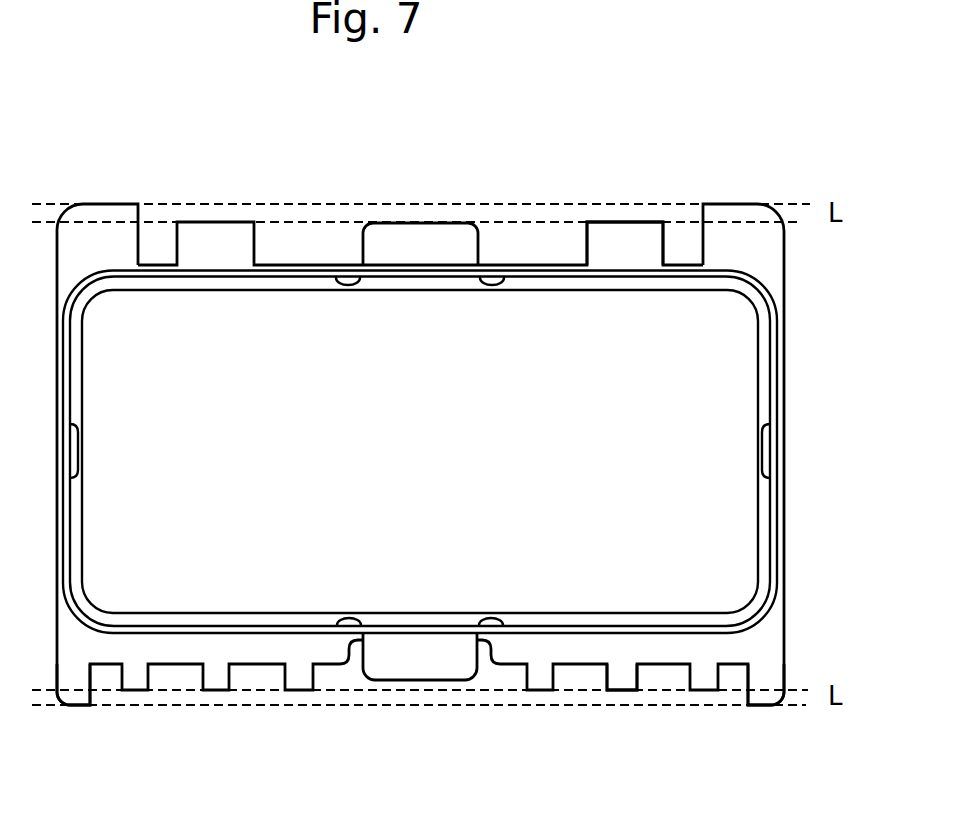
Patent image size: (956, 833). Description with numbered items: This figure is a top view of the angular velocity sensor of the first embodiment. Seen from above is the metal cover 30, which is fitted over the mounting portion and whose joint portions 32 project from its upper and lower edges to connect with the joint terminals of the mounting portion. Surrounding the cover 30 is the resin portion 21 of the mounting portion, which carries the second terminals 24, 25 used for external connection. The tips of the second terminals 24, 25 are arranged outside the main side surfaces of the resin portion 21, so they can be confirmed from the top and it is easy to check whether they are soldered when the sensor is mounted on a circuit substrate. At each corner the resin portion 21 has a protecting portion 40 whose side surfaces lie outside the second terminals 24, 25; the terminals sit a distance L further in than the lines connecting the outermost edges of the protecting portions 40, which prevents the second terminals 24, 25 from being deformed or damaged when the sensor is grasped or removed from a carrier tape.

The resin portion 21 is at (763, 268).
The second terminal 24 is at (636, 246).
The second terminal 25 is at (625, 685).
The cover 30 is at (542, 318).
The joint portion 32 is at (447, 238).
The protecting portion 40 is at (105, 232).